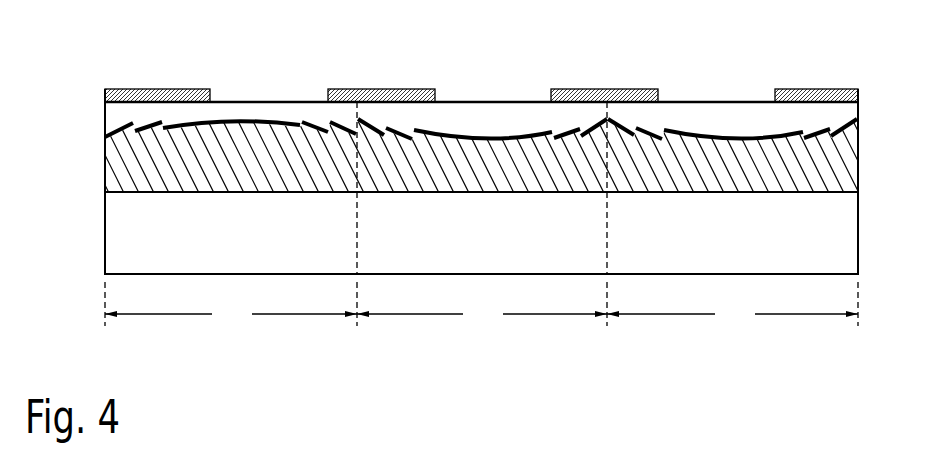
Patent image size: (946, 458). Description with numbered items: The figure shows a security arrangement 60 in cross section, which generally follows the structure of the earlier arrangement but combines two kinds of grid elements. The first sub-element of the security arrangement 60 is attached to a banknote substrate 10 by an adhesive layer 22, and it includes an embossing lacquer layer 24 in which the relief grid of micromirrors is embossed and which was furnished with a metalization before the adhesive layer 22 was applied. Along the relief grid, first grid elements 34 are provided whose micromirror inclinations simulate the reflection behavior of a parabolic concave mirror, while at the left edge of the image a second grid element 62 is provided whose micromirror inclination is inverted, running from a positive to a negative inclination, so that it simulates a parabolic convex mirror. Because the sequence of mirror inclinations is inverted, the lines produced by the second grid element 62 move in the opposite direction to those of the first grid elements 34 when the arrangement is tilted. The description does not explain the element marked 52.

The security arrangement 60 is at (92, 55).
The banknote substrate 10 is at (848, 233).
The adhesive layer 22 is at (850, 167).
The embossing lacquer layer 24 is at (848, 117).
The contact pad 52 is at (601, 88).
The second grid element 62 is at (231, 315).
The first grid element 34 is at (607, 315).